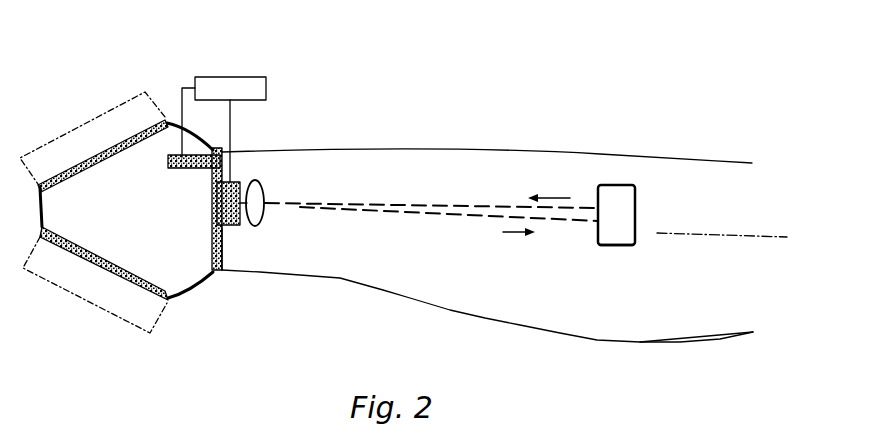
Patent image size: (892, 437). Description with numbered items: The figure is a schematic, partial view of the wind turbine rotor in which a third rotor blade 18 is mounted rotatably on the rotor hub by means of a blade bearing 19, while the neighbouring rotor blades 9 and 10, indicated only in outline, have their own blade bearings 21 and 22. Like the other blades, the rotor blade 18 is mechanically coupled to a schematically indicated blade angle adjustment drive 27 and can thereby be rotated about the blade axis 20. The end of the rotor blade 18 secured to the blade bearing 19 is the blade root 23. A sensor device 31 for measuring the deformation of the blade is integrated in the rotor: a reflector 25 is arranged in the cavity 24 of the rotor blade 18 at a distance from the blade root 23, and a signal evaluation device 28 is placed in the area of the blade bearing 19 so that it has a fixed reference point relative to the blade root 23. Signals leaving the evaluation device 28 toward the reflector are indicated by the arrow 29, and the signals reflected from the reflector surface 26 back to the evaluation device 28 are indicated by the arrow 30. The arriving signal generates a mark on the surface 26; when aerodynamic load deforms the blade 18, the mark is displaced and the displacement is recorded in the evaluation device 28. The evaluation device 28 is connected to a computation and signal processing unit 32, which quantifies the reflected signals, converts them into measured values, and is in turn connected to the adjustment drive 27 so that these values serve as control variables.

The rotor blade 9 is at (88, 118).
The rotor blade 10 is at (90, 305).
The third rotor blade 18 is at (680, 304).
The blade bearing 19 is at (212, 247).
The blade axis 20 is at (747, 233).
The blade bearing 21 is at (100, 167).
The blade bearing 22 is at (168, 300).
The blade root 23 is at (231, 259).
The cavity 24 is at (380, 265).
The reflector 25 is at (635, 200).
The reflector surface 26 is at (598, 240).
The blade angle adjustment drive 27 is at (167, 123).
The signal evaluation device 28 is at (238, 182).
The arrow indicating emitted signals 29 is at (518, 237).
The arrow indicating reflected signals 30 is at (545, 178).
The sensor device 31 is at (572, 118).
The computation and signal processing unit 32 is at (266, 88).